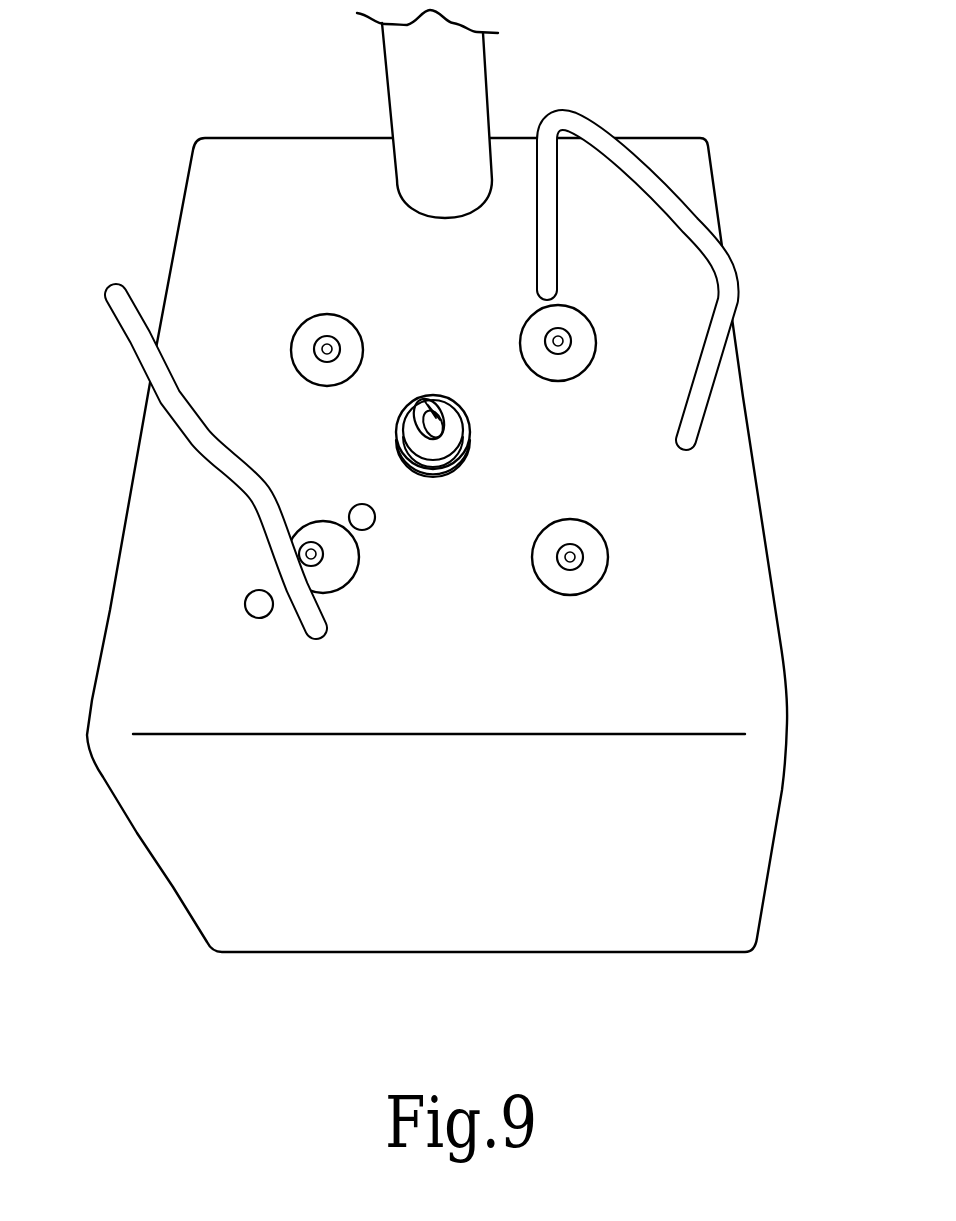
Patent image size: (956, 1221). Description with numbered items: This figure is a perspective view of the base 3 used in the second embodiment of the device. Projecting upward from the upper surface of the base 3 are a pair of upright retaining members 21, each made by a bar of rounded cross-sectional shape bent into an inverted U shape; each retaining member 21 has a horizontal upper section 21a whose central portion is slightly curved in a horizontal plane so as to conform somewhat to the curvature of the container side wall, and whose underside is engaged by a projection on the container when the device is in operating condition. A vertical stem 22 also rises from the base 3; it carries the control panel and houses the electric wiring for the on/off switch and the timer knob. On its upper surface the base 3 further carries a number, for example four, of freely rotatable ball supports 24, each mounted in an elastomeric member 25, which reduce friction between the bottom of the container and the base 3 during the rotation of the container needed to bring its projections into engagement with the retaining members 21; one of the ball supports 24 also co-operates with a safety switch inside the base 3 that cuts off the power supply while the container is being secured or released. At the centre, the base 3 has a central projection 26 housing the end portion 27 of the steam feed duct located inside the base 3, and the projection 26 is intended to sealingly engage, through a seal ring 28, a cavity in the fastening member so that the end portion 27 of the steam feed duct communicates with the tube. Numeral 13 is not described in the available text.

The base 3 is at (678, 727).
The electrode 13 is at (436, 402).
The retaining member 21 is at (421, 374).
The horizontal upper section 21a is at (688, 228).
The vertical stem 22 is at (415, 52).
The ball support 24 is at (457, 447).
The elastomeric member 25 is at (319, 347).
The central projection 26 is at (421, 423).
The end portion of the steam feed duct 27 is at (421, 410).
The seal ring 28 is at (459, 391).